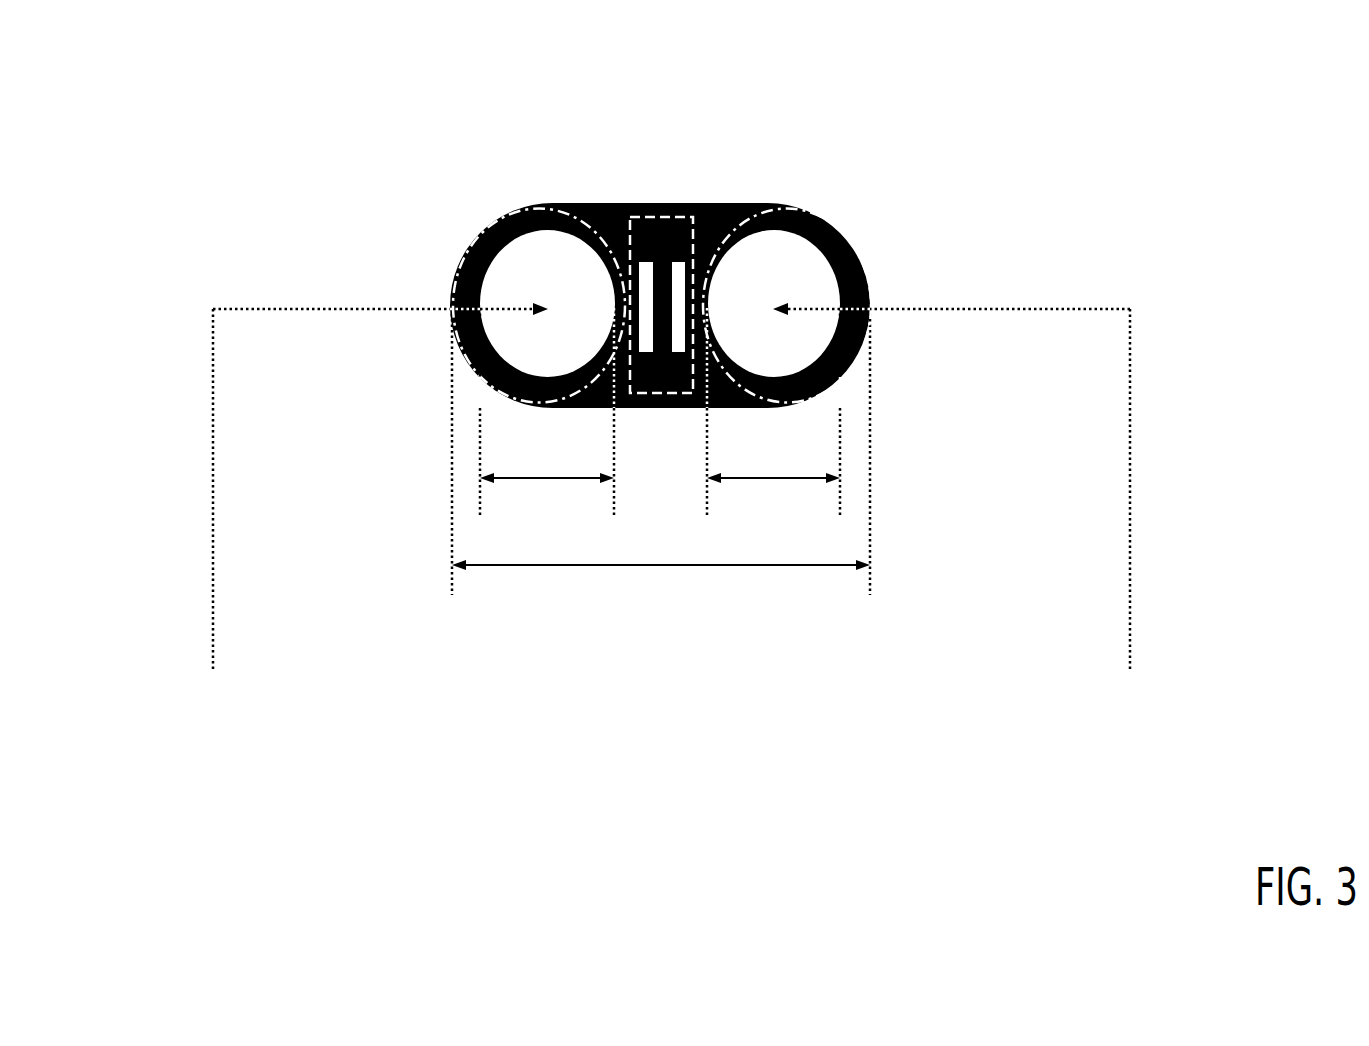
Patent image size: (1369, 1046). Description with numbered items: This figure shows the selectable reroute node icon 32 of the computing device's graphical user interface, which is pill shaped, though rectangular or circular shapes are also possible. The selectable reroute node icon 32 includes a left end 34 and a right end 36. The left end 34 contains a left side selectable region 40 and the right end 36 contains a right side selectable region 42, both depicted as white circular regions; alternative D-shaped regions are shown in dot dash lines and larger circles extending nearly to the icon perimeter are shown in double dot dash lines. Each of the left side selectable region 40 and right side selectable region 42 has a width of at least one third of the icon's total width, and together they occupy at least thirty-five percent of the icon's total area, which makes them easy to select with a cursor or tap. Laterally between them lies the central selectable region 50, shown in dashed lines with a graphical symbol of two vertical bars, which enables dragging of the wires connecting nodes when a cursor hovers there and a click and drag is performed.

The selectable reroute node icon 32 is at (323, 190).
The left end 34 is at (502, 188).
The right end 36 is at (830, 188).
The left side selectable region 40 is at (503, 797).
The right side selectable region 42 is at (838, 797).
The central selectable region 50 is at (678, 284).